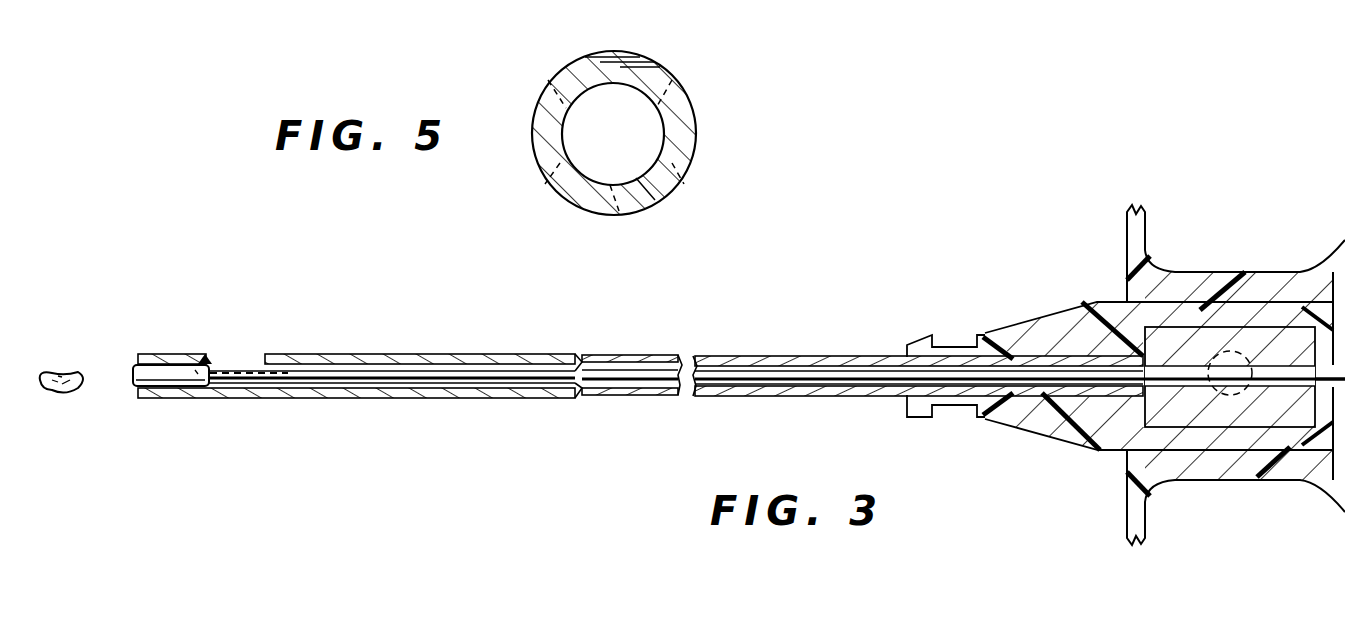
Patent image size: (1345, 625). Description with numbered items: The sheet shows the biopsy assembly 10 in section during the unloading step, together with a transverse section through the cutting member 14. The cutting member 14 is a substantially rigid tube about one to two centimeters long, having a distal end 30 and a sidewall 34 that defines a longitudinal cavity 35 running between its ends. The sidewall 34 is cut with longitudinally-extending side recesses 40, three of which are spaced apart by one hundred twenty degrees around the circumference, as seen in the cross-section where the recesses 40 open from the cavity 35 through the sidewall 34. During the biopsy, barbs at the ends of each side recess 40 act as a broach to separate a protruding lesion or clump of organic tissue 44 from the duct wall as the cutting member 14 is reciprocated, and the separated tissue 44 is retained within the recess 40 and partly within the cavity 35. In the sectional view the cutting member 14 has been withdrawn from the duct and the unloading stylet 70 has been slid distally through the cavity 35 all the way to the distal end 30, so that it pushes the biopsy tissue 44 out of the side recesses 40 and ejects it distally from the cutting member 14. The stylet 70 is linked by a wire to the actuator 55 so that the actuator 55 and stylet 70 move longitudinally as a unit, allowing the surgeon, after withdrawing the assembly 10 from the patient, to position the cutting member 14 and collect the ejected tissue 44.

In FIG. 3, the assembly 10 is at (486, 350).
In FIG. 5, the cutting member 14 is at (698, 143).
In FIG. 3, the distal end 30 is at (136, 392).
In FIG. 5, the sidewall 34 is at (655, 200).
In FIG. 5, the longitudinal cavity 35 is at (628, 141).
In FIG. 5, the side recess 40 is at (660, 75).
In FIG. 3, the side recess 40 is at (229, 368).
In FIG. 3, the biopsy tissue 44 is at (65, 394).
In FIG. 3, the actuator 55 is at (1089, 302).
In FIG. 3, the unloading stylet 70 is at (140, 370).